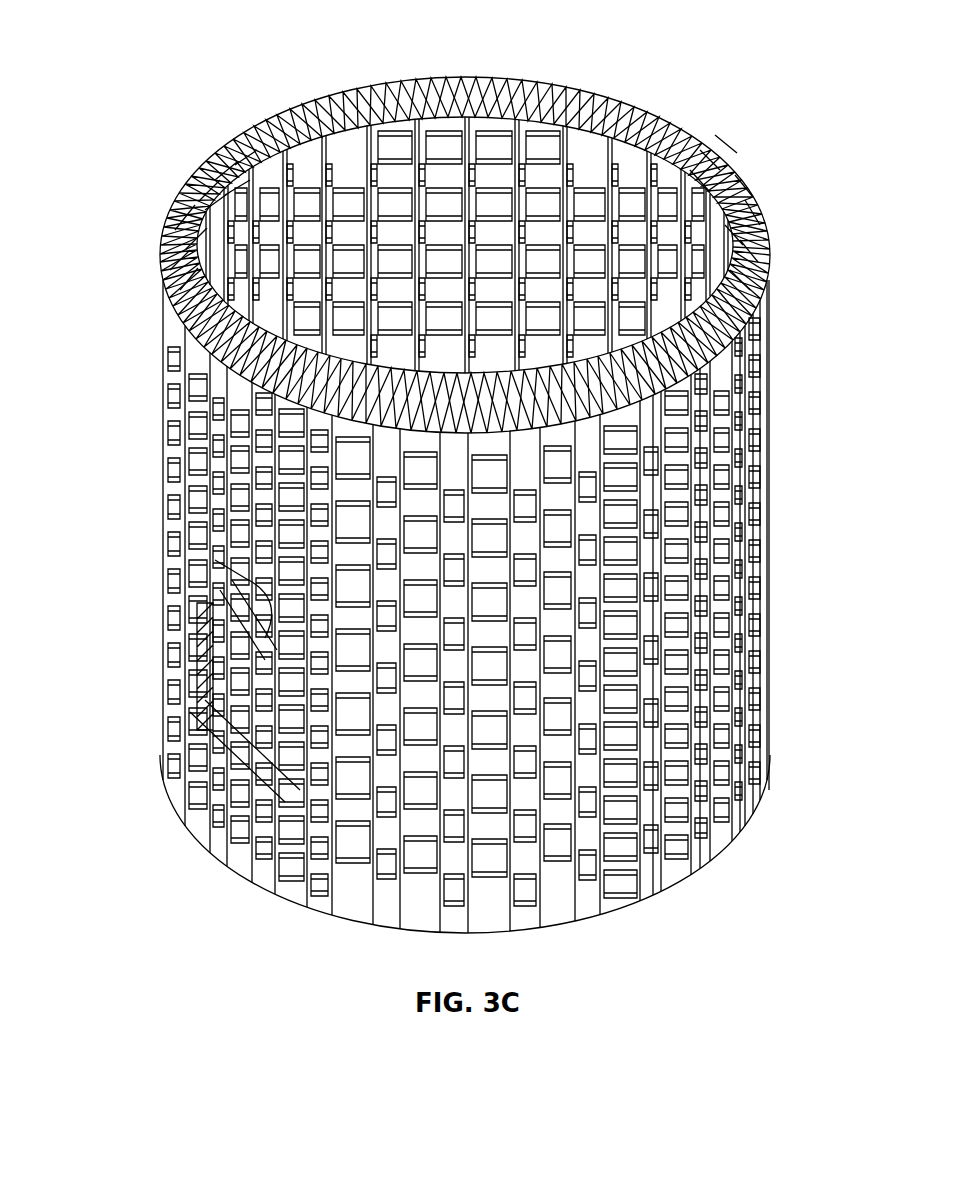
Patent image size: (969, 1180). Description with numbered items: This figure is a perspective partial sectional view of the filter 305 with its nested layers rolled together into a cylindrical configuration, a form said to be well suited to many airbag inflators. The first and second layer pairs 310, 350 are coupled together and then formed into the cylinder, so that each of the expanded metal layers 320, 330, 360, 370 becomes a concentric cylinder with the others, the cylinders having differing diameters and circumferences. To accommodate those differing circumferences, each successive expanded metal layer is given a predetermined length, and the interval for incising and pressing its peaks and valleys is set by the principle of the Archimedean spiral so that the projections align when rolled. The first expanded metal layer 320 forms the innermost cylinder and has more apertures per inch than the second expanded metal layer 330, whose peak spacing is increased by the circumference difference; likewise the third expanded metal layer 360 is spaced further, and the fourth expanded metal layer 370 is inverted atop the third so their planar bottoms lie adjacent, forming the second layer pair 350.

The filter 305 is at (447, 40).
The first layer pair 310 is at (300, 103).
The first expanded metal layer 320 is at (540, 115).
The second expanded metal layer 330 is at (613, 115).
The second layer pair 350 is at (212, 158).
The third expanded metal layer 360 is at (703, 150).
The fourth expanded metal layer 370 is at (770, 310).